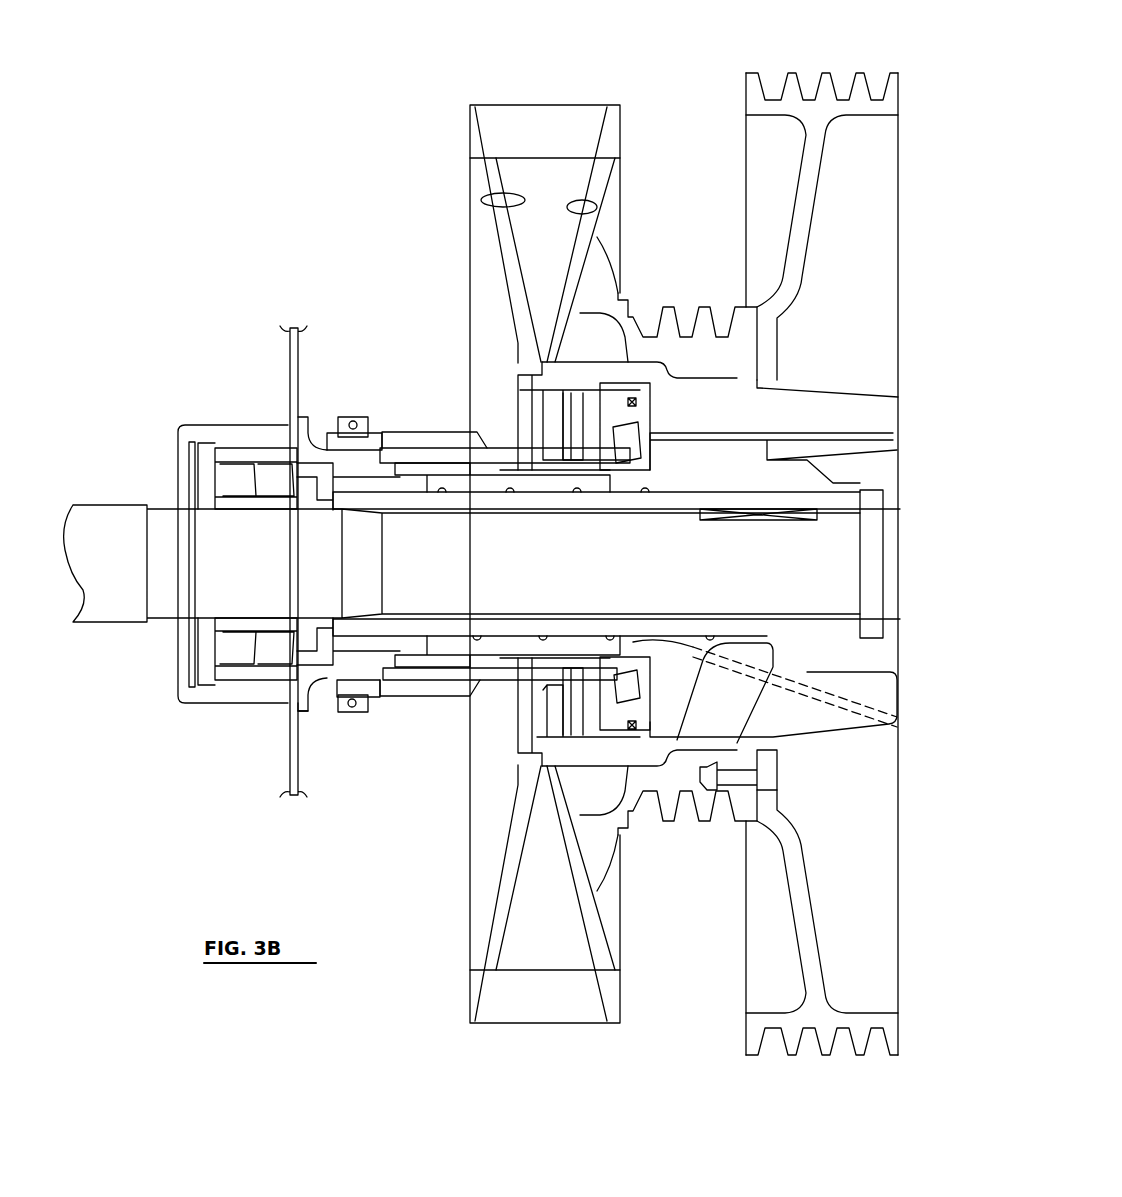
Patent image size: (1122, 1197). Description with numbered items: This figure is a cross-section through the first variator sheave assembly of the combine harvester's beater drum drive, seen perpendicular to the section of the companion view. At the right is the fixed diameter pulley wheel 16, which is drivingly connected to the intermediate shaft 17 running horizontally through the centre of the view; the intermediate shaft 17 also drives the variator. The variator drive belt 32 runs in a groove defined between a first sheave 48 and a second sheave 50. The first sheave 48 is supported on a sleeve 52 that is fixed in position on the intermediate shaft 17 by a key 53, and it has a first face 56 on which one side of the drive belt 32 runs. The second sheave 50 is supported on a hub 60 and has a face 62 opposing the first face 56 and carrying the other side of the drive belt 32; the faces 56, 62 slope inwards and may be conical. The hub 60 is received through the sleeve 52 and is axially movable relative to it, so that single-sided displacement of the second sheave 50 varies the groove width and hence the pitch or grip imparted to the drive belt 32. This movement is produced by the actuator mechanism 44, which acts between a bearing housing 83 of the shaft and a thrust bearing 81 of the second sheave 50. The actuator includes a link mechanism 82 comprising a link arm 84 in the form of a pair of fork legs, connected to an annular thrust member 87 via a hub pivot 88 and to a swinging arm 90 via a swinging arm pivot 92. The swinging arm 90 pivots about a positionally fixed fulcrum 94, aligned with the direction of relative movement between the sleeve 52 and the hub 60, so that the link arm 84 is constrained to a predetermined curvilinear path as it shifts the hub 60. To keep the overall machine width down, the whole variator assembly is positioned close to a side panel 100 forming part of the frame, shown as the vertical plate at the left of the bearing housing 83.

The fixed diameter pulley wheel 16 is at (862, 104).
The drive belt 32 is at (497, 118).
The second sheave 50 is at (480, 150).
The first sheave 48 is at (614, 145).
The face 62 is at (503, 212).
The first face 56 is at (582, 212).
The sleeve 52 is at (635, 325).
The hub pivot 88 is at (570, 412).
The annular thrust member 87 is at (553, 708).
The link arm 84 is at (462, 452).
The swinging arm 90 is at (403, 432).
The link mechanism 82 is at (382, 390).
The swinging arm pivot 92 is at (410, 433).
The fulcrum 94 is at (343, 433).
The thrust bearing 81 is at (650, 432).
The hub 60 is at (867, 412).
The key 53 is at (805, 517).
The intermediate shaft 17 is at (105, 595).
The side panel 100 is at (288, 764).
The bearing housing 83 is at (303, 712).
The actuator mechanism 44 is at (402, 773).